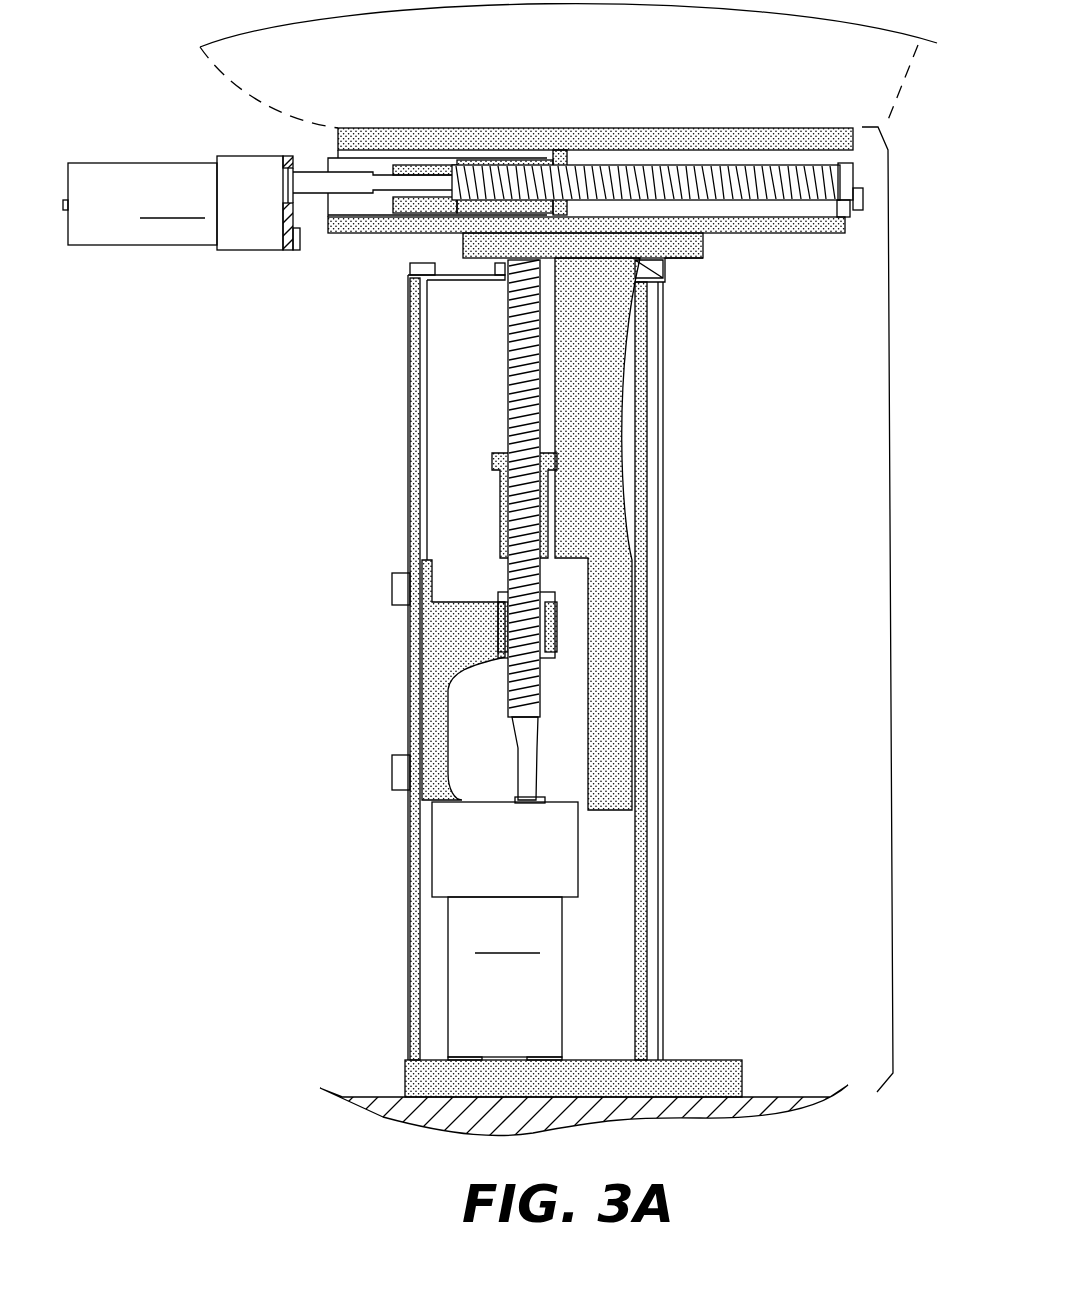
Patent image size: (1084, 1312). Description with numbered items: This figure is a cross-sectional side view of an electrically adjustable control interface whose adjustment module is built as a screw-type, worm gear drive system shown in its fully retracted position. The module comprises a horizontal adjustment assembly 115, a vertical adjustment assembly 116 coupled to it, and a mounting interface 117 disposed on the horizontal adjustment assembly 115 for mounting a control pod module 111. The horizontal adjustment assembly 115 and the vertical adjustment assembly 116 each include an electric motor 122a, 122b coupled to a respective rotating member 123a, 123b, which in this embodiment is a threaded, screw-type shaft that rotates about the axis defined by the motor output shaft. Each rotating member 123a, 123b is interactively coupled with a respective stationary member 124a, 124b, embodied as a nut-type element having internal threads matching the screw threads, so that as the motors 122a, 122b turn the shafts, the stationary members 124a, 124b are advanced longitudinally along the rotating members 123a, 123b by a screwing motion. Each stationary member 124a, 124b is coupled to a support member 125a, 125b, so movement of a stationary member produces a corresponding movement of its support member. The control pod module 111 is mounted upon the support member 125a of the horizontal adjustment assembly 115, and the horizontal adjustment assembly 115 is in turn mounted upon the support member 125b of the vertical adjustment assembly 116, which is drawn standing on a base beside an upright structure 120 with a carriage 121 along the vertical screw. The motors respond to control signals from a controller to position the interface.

The control pod module 111 is at (230, 80).
The horizontal adjustment assembly 115 is at (463, 219).
The vertical adjustment assembly 116 is at (382, 660).
The mounting interface 117 is at (371, 143).
The support column 120 is at (892, 548).
The carriage 121 is at (408, 690).
The electric motor 122a is at (258, 204).
The electric motor 122b is at (505, 931).
The rotating member 123a is at (625, 178).
The rotating member 123b is at (508, 358).
The stationary member 124a is at (563, 173).
The stationary member 124b is at (505, 495).
The support member 125a is at (481, 143).
The support member 125b is at (592, 353).